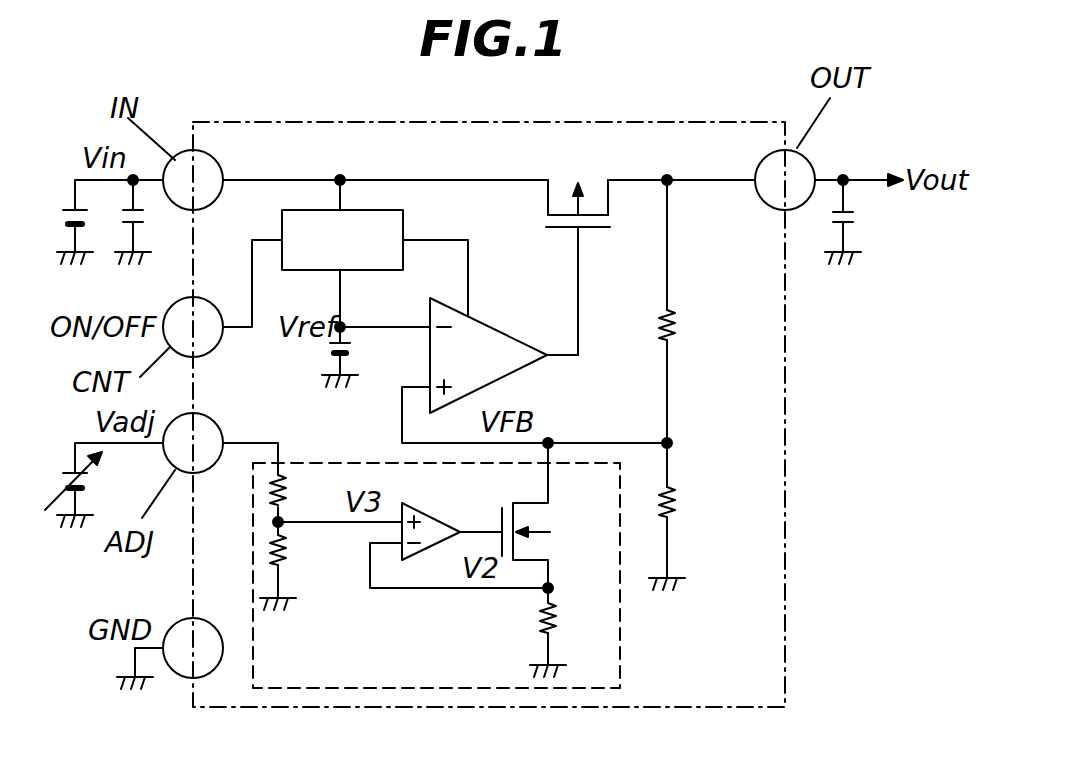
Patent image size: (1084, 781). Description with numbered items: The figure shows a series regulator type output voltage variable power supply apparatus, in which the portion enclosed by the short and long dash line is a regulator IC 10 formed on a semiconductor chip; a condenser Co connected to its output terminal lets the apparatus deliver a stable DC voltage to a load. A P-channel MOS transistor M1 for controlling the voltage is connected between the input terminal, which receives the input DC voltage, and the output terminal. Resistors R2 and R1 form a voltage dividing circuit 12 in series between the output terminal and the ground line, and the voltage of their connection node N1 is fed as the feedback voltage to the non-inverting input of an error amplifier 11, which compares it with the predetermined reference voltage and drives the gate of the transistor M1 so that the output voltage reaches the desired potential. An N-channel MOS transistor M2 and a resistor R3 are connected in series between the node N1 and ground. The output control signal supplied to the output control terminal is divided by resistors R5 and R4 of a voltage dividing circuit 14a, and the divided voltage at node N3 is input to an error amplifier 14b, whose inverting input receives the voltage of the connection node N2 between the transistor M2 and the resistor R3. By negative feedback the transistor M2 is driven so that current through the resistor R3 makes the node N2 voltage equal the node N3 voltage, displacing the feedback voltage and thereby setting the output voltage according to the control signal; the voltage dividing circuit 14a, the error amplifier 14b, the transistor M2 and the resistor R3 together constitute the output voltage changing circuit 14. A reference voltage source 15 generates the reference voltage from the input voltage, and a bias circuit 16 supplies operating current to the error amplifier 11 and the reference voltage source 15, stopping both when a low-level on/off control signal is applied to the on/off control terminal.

The regulator IC 10 is at (603, 122).
The error amplifier 11 is at (498, 323).
The voltage dividing circuit 12 is at (702, 401).
The output voltage changing circuit 14 is at (623, 632).
The voltage dividing circuit 14a is at (290, 552).
The error amplifier 14b is at (432, 520).
The reference voltage source 15 is at (316, 362).
The bias circuit 16 is at (403, 227).
The P-channel MOS transistor M1 is at (578, 251).
The N-channel MOS transistor M2 is at (577, 520).
The resistor R1 is at (687, 516).
The resistor R2 is at (692, 311).
The resistor R3 is at (567, 632).
The resistor R4 is at (301, 548).
The resistor R5 is at (301, 490).
The connection node N1 is at (673, 440).
The connection node N2 is at (553, 583).
The node N3 is at (273, 528).
The condenser Co is at (866, 222).